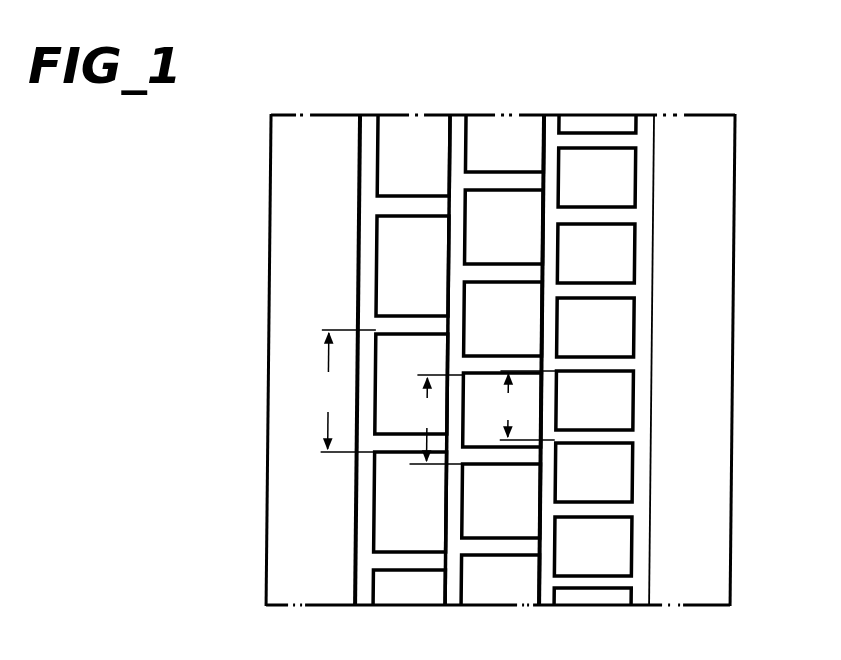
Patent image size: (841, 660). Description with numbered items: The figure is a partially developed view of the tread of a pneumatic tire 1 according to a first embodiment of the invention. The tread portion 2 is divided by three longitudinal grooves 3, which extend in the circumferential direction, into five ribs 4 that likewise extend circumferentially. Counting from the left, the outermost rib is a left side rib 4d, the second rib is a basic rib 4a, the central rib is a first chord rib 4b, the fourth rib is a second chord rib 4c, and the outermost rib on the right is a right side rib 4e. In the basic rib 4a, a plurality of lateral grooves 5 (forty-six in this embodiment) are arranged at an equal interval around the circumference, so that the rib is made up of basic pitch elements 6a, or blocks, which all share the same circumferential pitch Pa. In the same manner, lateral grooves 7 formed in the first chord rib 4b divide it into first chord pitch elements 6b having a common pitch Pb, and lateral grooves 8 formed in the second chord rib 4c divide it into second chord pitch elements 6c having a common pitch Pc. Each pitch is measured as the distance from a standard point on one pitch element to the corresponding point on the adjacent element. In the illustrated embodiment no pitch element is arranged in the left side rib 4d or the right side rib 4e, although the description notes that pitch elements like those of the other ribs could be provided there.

The pneumatic tire 1 is at (748, 123).
The tread portion 2 is at (318, 590).
The longitudinal grooves 3 is at (368, 590).
The ribs 4 is at (267, 62).
The basic rib 4a is at (444, 333).
The first chord rib 4b is at (468, 333).
The second chord rib 4c is at (627, 333).
The left side rib 4d is at (321, 137).
The right side rib 4e is at (690, 137).
The lateral grooves 5 is at (418, 202).
The basic pitch elements 6a is at (444, 360).
The first chord pitch elements 6b is at (468, 360).
The second chord pitch elements 6c is at (626, 360).
The lateral grooves 7 is at (516, 184).
The lateral grooves 8 is at (598, 220).
The circumferential pitch Pa is at (343, 391).
The pitch Pb is at (437, 419).
The pitch Pc is at (526, 405).